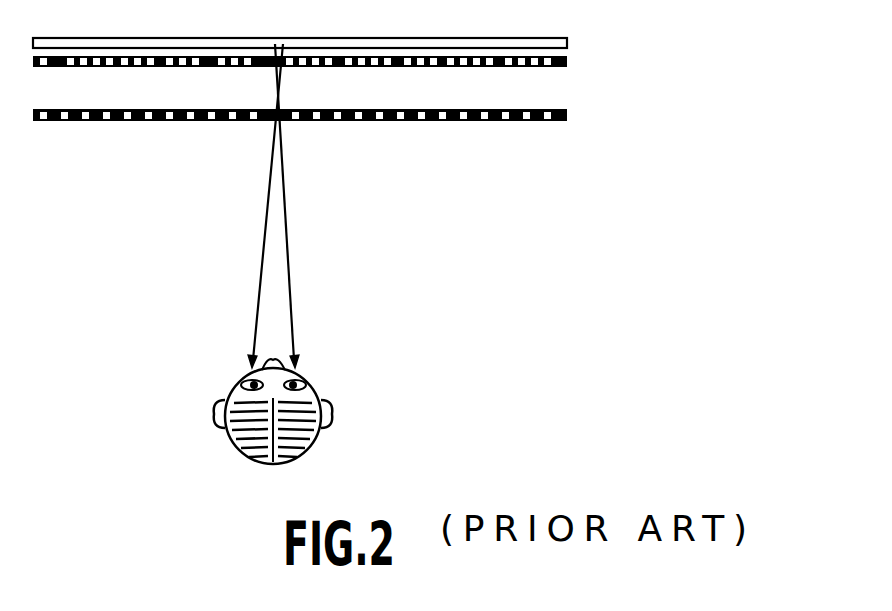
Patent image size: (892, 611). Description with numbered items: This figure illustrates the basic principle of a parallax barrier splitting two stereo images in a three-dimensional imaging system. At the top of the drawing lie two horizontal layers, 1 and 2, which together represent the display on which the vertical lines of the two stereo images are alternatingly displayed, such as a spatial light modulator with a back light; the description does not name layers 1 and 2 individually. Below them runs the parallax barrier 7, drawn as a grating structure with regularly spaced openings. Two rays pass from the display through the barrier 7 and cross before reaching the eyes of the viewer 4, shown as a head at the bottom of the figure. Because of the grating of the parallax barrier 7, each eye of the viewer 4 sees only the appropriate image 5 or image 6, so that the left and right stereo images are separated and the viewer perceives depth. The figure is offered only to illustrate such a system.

The transparent cover layer 1 is at (568, 44).
The first lenticular/image layer 2 is at (568, 67).
The parallax barrier 7 is at (585, 120).
The viewer 4 is at (310, 411).
The image 5 is at (228, 206).
The image 6 is at (329, 206).